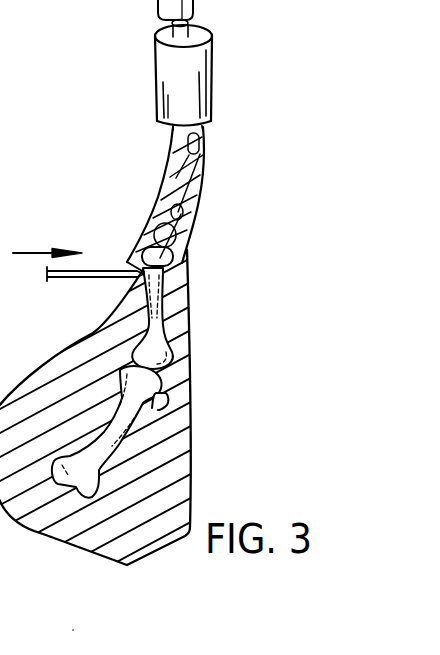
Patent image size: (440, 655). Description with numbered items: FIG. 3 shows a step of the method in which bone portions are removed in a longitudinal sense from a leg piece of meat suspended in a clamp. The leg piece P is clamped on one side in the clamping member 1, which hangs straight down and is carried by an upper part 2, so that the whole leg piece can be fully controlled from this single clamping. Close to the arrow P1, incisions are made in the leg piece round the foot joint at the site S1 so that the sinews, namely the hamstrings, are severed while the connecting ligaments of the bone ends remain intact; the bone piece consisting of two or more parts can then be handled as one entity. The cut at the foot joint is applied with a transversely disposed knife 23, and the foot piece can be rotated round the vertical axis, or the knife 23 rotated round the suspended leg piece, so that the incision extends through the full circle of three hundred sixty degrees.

The clamping member 1 is at (206, 93).
The drive connector cap 2 is at (191, 22).
The knife 23 is at (70, 280).
The patient body P is at (163, 480).
The arrow P1 is at (33, 251).
The skin entry site S1 is at (144, 271).